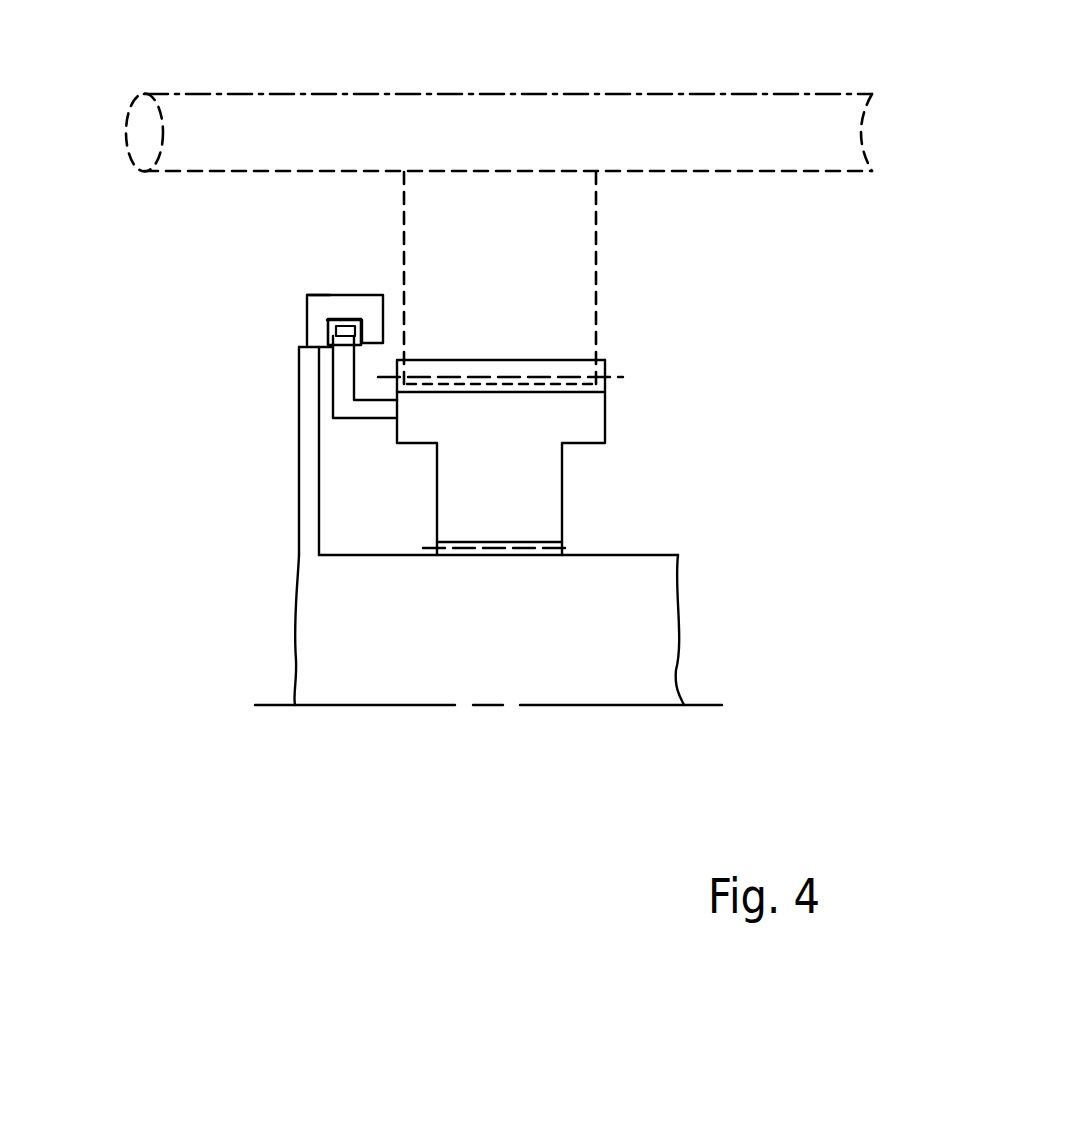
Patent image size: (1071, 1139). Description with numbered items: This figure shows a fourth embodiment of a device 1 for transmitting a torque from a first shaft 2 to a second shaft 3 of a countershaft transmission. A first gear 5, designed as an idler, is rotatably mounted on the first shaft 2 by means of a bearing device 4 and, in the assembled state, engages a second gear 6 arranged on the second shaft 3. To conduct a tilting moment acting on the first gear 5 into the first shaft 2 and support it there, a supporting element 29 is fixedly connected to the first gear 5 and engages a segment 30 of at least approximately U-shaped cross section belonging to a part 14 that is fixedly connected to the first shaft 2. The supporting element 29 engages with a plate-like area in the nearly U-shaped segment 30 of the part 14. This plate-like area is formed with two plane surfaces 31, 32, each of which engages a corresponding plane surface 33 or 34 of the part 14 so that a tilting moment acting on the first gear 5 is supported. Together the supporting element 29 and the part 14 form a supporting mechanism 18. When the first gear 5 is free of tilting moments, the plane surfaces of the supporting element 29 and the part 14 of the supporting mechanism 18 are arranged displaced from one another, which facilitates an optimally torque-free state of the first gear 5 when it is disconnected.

The device for transmitting a torque 1 is at (124, 294).
The first shaft 2 is at (340, 640).
The second shaft 3 is at (736, 140).
The bearing device 4 is at (474, 572).
The first gear 5 is at (507, 475).
The second gear 6 is at (506, 212).
The part 14 is at (285, 404).
The supporting mechanism 18 is at (316, 280).
The supporting element 29 is at (345, 372).
The segment 30 is at (307, 295).
The plane surface 31 is at (326, 342).
The plane surface 32 is at (336, 357).
The plane surface 33 is at (346, 310).
The plane surface 34 is at (322, 358).